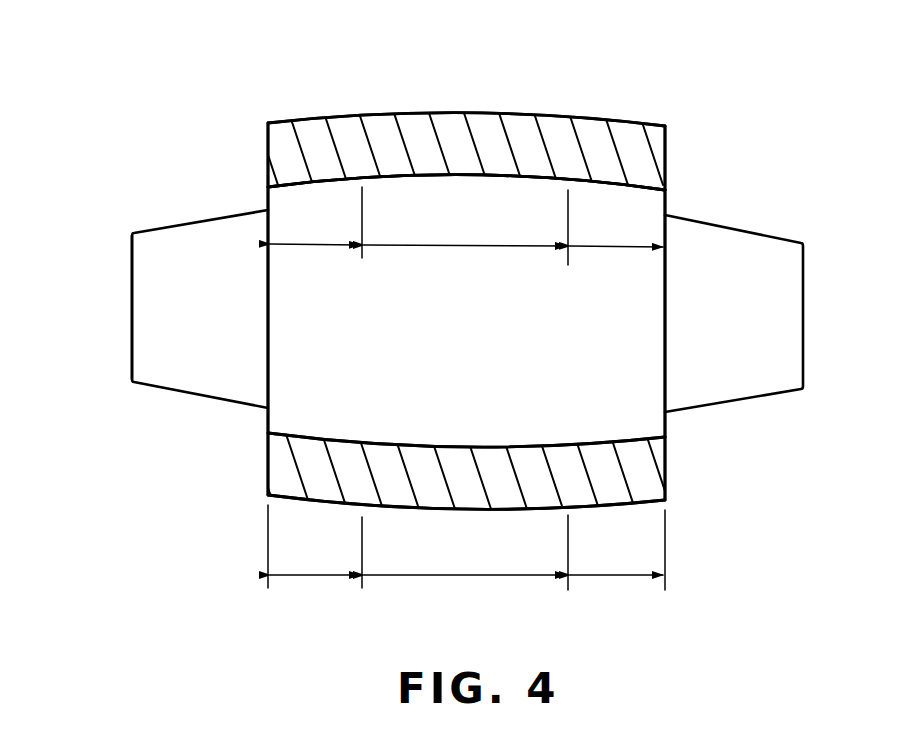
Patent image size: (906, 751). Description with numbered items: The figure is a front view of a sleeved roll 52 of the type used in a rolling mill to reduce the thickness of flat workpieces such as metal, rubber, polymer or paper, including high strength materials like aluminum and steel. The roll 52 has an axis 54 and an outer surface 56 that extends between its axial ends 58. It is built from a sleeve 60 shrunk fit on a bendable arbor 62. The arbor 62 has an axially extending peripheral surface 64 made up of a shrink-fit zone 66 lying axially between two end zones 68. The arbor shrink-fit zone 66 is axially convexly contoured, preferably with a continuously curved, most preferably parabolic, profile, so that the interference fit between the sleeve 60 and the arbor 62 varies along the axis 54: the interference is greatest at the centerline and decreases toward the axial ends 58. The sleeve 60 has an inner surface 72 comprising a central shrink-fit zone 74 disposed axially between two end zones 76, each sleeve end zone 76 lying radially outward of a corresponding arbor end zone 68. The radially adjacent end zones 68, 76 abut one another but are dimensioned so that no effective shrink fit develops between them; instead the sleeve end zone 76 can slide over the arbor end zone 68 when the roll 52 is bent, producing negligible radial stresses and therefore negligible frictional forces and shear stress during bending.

The sleeved roll 52 is at (163, 222).
The axis 54 is at (130, 302).
The outer surface 56 is at (330, 118).
The axial ends 58 is at (268, 152).
The sleeve 60 is at (433, 113).
The bendable arbor 62 is at (665, 205).
The peripheral surface 64 is at (510, 175).
The arbor shrink-fit zone 66 is at (464, 248).
The arbor end zone 68 is at (322, 248).
The sleeve inner surface 72 is at (462, 450).
The sleeve shrink-fit zone 74 is at (463, 577).
The sleeve end zone 76 is at (325, 577).